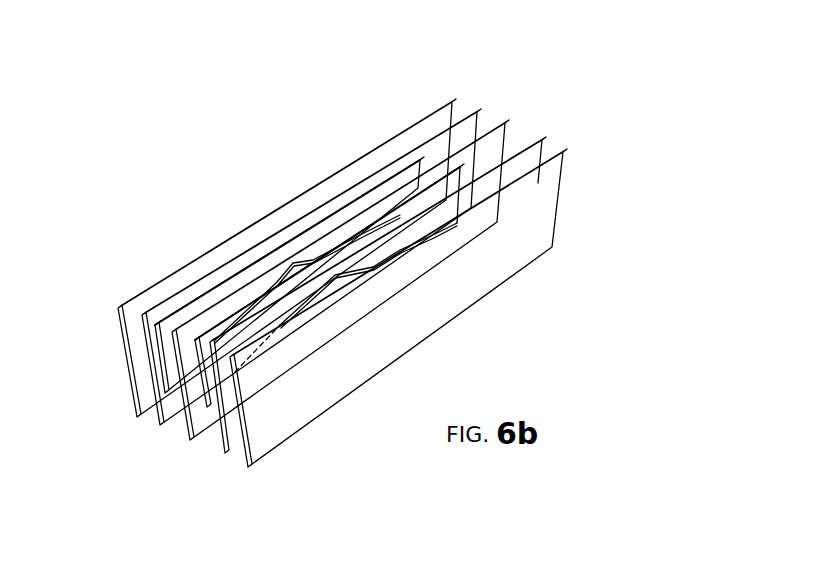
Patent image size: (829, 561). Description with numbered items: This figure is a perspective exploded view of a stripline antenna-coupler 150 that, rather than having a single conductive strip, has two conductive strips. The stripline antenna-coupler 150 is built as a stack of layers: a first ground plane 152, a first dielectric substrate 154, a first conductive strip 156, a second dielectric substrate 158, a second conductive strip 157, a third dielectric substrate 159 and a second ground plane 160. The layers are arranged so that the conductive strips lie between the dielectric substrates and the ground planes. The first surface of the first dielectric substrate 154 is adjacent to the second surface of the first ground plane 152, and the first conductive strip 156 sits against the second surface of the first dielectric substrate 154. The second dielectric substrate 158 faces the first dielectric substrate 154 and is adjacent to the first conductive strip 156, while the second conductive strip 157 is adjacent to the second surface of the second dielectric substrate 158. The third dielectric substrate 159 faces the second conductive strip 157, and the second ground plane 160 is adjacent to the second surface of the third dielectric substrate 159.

The stripline antenna-coupler 150 is at (632, 80).
The first ground plane 152 is at (367, 153).
The first dielectric substrate 154 is at (310, 220).
The first conductive strip 156 is at (417, 155).
The second conductive strip 157 is at (535, 150).
The second dielectric substrate 158 is at (497, 135).
The third dielectric substrate 159 is at (257, 320).
The second ground plane 160 is at (267, 432).